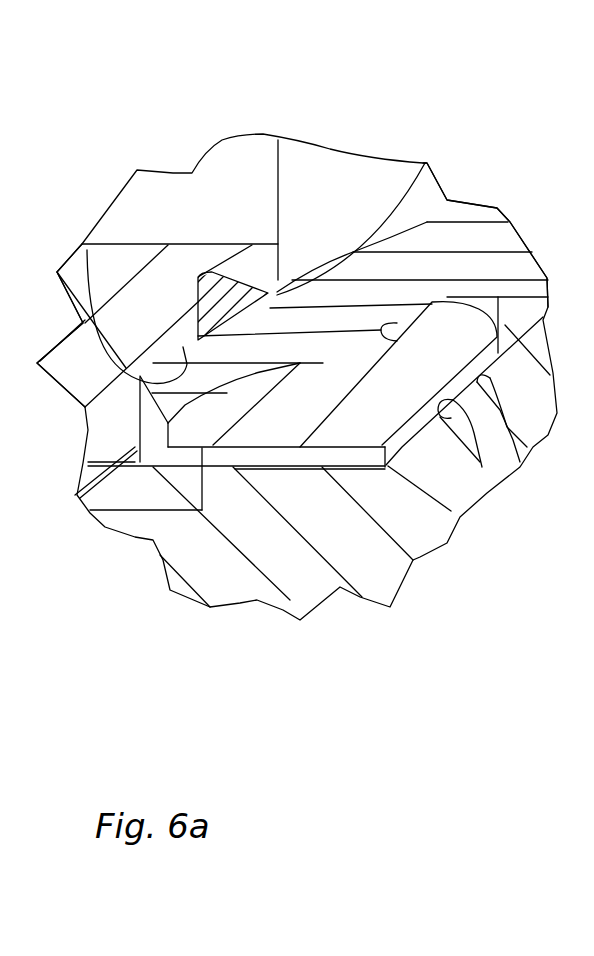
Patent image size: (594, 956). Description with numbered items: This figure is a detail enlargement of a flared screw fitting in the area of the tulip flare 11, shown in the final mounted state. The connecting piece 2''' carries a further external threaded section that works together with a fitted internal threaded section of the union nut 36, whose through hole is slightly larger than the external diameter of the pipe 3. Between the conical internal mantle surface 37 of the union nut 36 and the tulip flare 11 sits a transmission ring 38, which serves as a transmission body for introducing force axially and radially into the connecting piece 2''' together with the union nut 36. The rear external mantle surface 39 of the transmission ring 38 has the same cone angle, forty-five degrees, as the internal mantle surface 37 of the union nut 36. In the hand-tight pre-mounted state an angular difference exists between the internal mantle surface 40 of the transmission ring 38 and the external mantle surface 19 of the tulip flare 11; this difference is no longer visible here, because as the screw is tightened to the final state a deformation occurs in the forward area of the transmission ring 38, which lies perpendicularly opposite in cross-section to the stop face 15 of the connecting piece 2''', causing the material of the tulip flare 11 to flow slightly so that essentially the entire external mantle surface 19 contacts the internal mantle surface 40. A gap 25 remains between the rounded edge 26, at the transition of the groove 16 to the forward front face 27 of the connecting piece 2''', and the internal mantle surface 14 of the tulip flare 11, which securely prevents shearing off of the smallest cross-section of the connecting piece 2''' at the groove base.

The connecting piece 2''' is at (52, 219).
The pipe 3 is at (524, 208).
The tulip flare 11 is at (378, 194).
The internal mantle surface 14 is at (420, 193).
The stop face 15 is at (78, 495).
The groove 16 is at (200, 278).
The external mantle surface 19 is at (437, 303).
The gap 25 is at (317, 270).
The rounded edge 26 is at (275, 293).
The forward front face 27 is at (280, 264).
The union nut 36 is at (451, 527).
The conical internal mantle surface 37 is at (482, 467).
The transmission ring 38 is at (240, 472).
The rear external mantle surface 39 is at (520, 462).
The internal mantle surface 40 is at (306, 347).